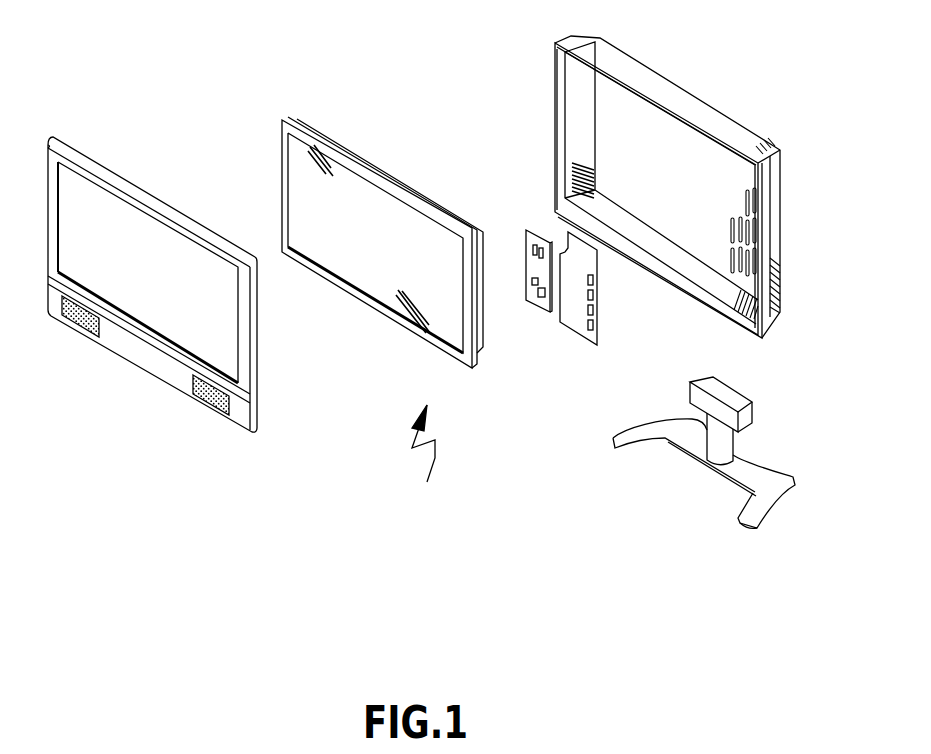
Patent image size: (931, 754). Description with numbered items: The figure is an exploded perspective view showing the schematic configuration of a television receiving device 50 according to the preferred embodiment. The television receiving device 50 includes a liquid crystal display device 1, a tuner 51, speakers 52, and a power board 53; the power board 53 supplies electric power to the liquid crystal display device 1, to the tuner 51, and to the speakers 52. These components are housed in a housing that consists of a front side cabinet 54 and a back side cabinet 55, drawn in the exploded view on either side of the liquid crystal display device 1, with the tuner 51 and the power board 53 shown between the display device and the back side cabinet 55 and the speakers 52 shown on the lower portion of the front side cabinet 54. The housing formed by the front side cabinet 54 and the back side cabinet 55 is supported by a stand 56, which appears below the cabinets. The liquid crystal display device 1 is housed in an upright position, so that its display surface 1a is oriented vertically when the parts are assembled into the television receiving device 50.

The liquid crystal display device 1 is at (382, 229).
The display surface 1a is at (363, 275).
The television receiving device 50 is at (426, 456).
The tuner 51 is at (535, 307).
The speakers 52 is at (68, 322).
The power board 53 is at (595, 298).
The front side cabinet 54 is at (98, 167).
The back side cabinet 55 is at (628, 55).
The stand 56 is at (715, 442).